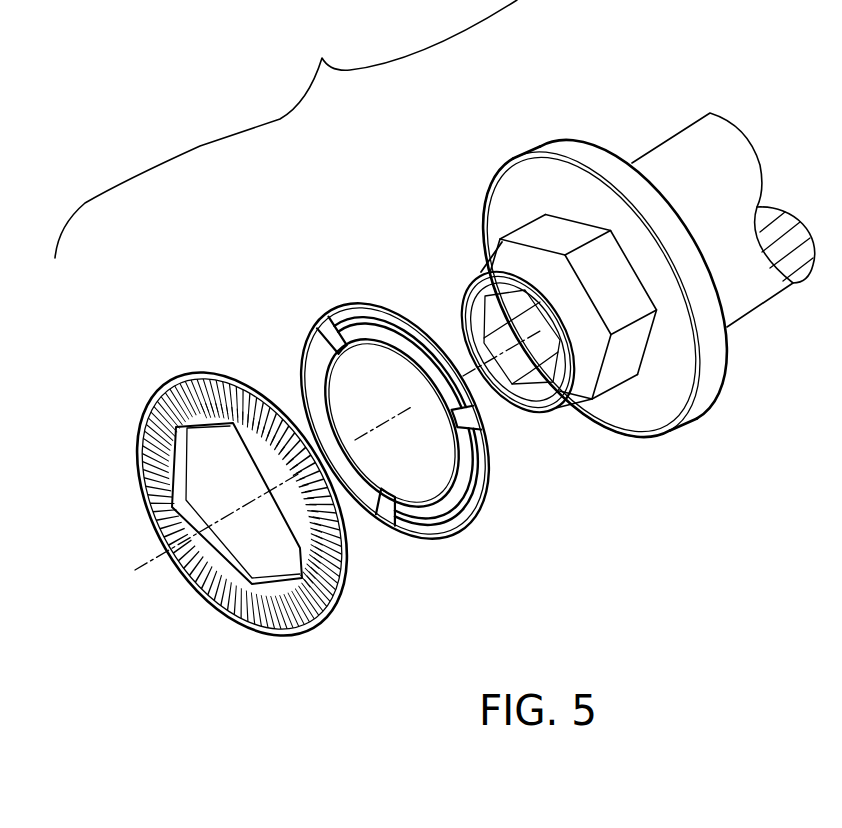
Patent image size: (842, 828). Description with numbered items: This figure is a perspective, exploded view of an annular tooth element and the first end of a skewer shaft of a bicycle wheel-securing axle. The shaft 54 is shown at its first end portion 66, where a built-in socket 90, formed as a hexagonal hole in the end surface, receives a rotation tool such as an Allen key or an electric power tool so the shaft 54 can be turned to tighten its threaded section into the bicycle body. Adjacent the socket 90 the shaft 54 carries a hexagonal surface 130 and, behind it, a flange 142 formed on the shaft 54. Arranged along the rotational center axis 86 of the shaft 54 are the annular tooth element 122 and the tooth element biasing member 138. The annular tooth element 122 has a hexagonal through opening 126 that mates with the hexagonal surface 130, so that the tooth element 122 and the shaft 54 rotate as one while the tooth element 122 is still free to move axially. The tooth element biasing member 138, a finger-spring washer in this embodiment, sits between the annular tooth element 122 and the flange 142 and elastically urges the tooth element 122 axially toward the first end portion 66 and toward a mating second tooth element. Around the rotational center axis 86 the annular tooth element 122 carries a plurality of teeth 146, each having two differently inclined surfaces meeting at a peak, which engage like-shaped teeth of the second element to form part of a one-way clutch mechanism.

The shaft 54 is at (708, 163).
The first end portion 66 is at (552, 346).
The rotational center axis 86 is at (152, 563).
The built-in socket 90 is at (508, 387).
The annular tooth element 122 is at (242, 501).
The hexagonal through opening 126 is at (178, 500).
The hexagonal surface 130 is at (637, 343).
The tooth element biasing member 138 is at (378, 303).
The flange 142 is at (598, 160).
The teeth 146 is at (242, 504).